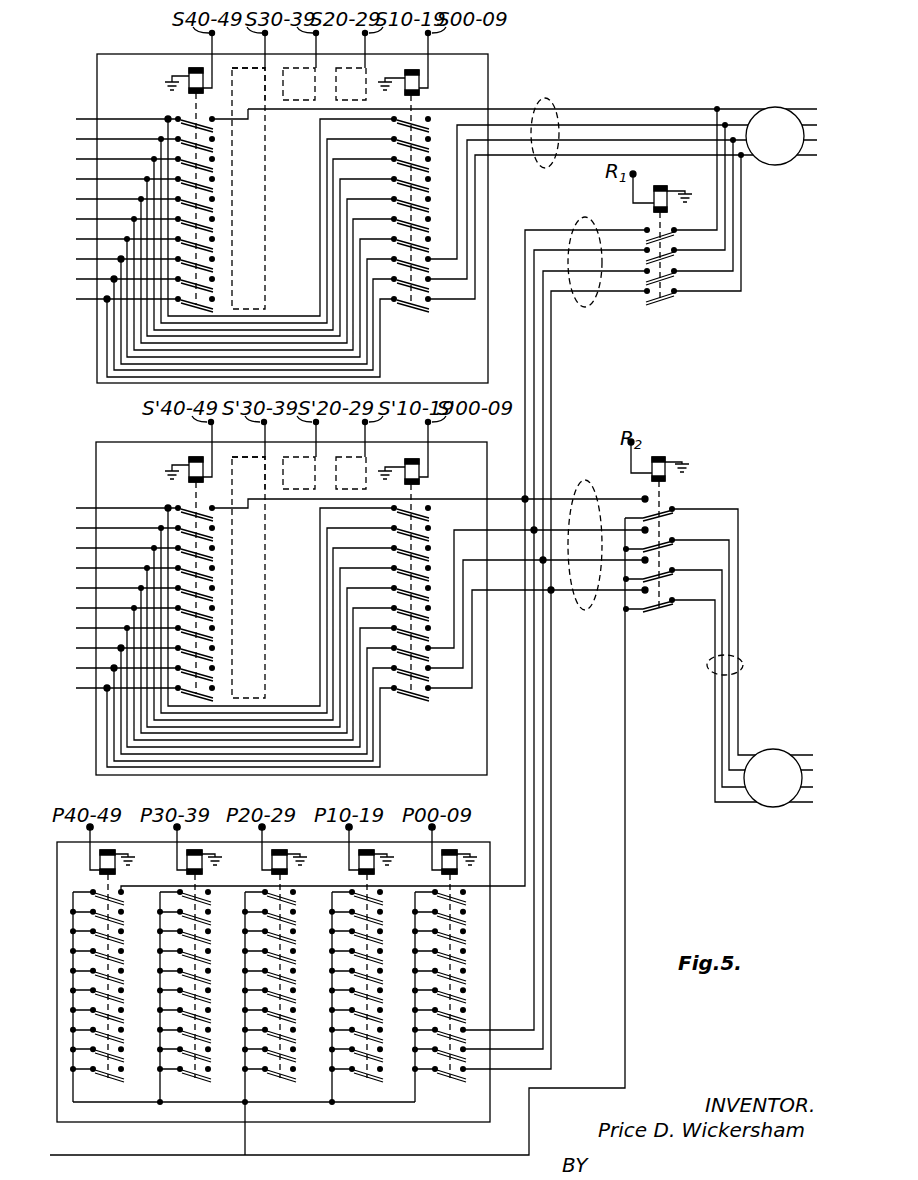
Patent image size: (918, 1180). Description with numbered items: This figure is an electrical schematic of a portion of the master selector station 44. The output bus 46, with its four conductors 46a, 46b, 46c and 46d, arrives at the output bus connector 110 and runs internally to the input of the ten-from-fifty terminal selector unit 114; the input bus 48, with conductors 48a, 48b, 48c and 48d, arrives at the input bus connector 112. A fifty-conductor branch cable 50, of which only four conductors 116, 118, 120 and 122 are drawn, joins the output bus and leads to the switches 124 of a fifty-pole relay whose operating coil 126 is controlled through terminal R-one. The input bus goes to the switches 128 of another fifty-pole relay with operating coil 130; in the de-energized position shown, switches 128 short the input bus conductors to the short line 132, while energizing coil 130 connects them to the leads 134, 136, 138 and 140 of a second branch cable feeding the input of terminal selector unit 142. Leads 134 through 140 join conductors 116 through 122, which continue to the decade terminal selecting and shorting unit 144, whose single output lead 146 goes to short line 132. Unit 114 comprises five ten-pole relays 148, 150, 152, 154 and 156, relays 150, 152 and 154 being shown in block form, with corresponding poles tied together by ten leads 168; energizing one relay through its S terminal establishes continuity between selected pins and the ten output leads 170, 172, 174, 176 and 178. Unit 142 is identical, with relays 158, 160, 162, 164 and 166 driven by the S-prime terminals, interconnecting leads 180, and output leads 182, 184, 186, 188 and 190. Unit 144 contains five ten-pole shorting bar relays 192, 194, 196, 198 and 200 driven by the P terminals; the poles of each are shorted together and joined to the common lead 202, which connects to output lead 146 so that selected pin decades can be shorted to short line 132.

The master selector station 44 is at (734, 99).
The output bus 46 is at (673, 104).
The output bus conductor 46a is at (583, 156).
The output bus conductor 46b is at (622, 140).
The output bus conductor 46c is at (600, 125).
The output bus conductor 46d is at (578, 110).
The input bus 48 is at (742, 712).
The input bus conductor 48a is at (713, 718).
The input bus conductor 48b is at (720, 700).
The input bus conductor 48c is at (815, 770).
The input bus conductor 48d is at (805, 755).
The 50-conductor branch cable 50 is at (545, 105).
The output bus connector 110 is at (778, 165).
The input bus connector 112 is at (770, 806).
The 10-from-50 terminal selector unit 114 is at (488, 66).
The branch cable conductor 116 is at (743, 290).
The branch cable conductor 118 is at (735, 266).
The branch cable conductor 120 is at (727, 242).
The branch cable conductor 122 is at (719, 218).
The switches 124 is at (672, 244).
The operating coil 126 is at (661, 186).
The switches 128 is at (668, 530).
The operating coil 130 is at (659, 457).
The short line 132 is at (640, 768).
The branch cable lead 134 is at (572, 598).
The branch cable lead 136 is at (612, 566).
The branch cable lead 138 is at (598, 534).
The branch cable lead 140 is at (596, 503).
The 10-from-50 terminal selector unit 142 is at (487, 460).
The decade terminal selecting and shorting unit 144 is at (490, 860).
The output lead 146 is at (245, 1136).
The 10-pole relay 148 is at (420, 106).
The 10-pole relay 150 is at (366, 68).
The 10-pole relay 152 is at (313, 68).
The 10-pole relay 154 is at (263, 68).
The 10-pole relay 156 is at (187, 83).
The 10-pole relay 158 is at (420, 498).
The 10-pole relay 160 is at (366, 457).
The 10-pole relay 162 is at (313, 457).
The 10-pole relay 164 is at (263, 457).
The 10-pole relay 166 is at (187, 487).
The interconnecting leads 168 is at (276, 316).
The output lead 170 is at (76, 299).
The output lead 172 is at (76, 279).
The output lead 174 is at (76, 259).
The output leads 176 is at (77, 133).
The output lead 178 is at (77, 118).
The interconnecting leads 180 is at (276, 706).
The output lead 182 is at (76, 688).
The output lead 184 is at (76, 668).
The output lead 186 is at (76, 648).
The output leads 188 is at (77, 522).
The output lead 190 is at (86, 507).
The 10-pole shorting bar relay 192 is at (430, 878).
The 10-pole shorting bar relay 194 is at (347, 878).
The 10-pole shorting bar relay 196 is at (260, 878).
The 10-pole shorting bar relay 198 is at (175, 878).
The 10-pole shorting bar relay 200 is at (88, 878).
The common lead 202 is at (326, 1102).